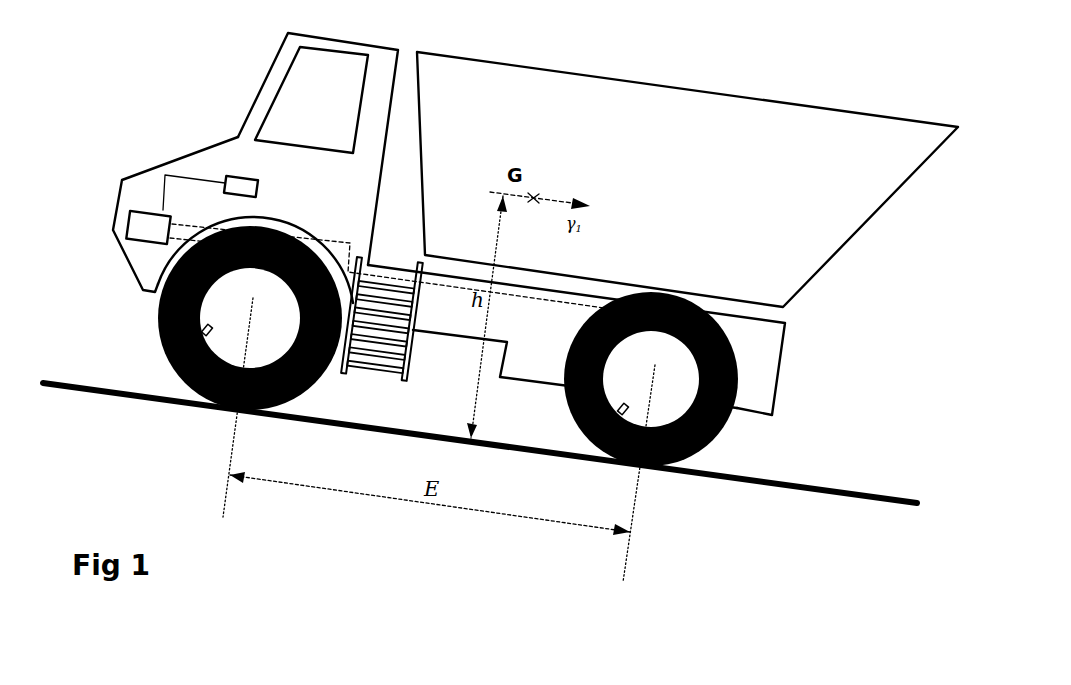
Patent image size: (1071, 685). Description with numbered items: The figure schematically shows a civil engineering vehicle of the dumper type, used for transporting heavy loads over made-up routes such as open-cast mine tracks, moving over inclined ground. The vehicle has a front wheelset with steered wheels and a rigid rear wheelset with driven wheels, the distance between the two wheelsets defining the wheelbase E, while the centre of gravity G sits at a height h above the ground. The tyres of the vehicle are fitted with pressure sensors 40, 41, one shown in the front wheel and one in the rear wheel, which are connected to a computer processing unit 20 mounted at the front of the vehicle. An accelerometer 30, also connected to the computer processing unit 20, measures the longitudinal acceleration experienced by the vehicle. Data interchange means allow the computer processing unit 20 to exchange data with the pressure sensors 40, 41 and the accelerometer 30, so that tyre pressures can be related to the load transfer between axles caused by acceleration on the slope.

The computer processing unit 20 is at (152, 228).
The accelerometer 30 is at (237, 181).
The pressure sensor 40 is at (207, 333).
The pressure sensor 41 is at (625, 406).